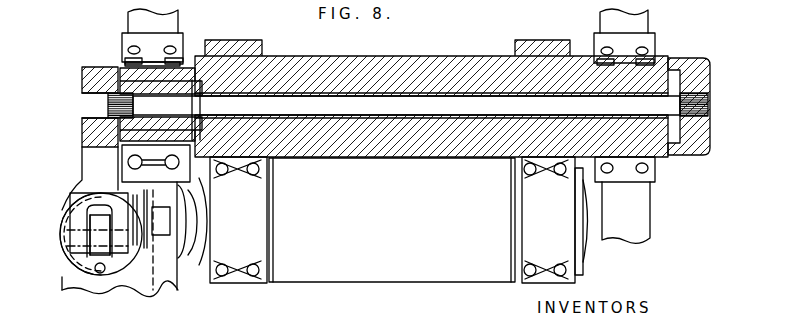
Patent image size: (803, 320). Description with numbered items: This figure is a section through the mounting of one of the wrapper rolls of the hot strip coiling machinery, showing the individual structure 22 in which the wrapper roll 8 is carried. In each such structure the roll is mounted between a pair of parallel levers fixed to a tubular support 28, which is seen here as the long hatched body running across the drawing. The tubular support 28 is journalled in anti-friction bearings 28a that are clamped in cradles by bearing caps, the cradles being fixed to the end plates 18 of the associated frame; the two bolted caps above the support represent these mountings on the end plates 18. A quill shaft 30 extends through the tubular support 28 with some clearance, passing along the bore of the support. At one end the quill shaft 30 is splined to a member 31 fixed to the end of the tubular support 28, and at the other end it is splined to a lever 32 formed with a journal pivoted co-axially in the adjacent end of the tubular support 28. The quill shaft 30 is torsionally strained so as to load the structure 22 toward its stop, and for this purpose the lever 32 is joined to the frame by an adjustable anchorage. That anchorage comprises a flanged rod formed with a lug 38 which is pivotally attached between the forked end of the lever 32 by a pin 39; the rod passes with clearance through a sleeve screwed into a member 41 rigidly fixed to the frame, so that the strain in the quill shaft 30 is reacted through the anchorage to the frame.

The wrapper roll 8 is at (495, 272).
The end plate 18 is at (135, 17).
The individual structure 22 is at (611, 224).
The tubular support 28 is at (412, 66).
The anti-friction bearings 28a is at (130, 63).
The quill shaft 30 is at (325, 104).
The splined member 31 is at (695, 78).
The lever 32 is at (90, 128).
The lug 38 is at (97, 248).
The pin 39 is at (68, 242).
The member 41 is at (112, 272).